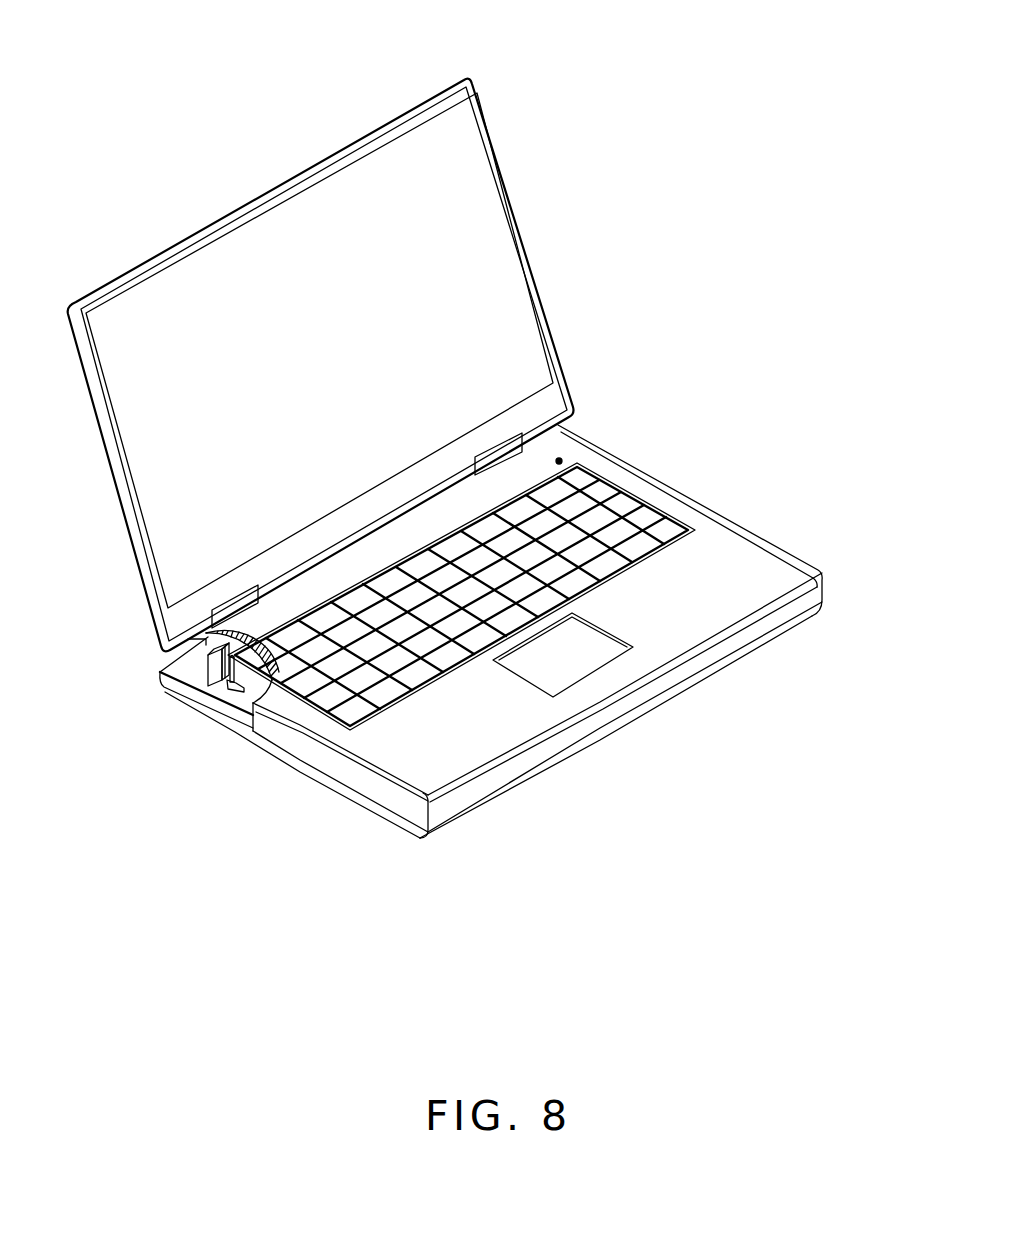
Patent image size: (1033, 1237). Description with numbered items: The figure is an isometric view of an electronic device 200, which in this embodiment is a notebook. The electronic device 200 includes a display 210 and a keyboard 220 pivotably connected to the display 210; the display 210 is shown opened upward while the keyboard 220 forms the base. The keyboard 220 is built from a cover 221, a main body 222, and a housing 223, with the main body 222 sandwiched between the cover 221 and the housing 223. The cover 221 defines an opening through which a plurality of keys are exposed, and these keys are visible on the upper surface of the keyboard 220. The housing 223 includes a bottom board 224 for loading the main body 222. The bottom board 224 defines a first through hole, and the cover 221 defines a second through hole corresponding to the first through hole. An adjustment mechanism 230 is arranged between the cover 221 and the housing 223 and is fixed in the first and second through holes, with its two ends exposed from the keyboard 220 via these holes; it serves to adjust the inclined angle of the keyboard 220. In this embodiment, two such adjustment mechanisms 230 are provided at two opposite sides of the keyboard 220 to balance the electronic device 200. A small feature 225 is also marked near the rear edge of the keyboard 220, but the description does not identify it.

The electronic device 200 is at (606, 74).
The display 210 is at (490, 222).
The keyboard 220 is at (622, 470).
The cover 221 is at (313, 723).
The main body 222 is at (385, 697).
The housing 223 is at (238, 723).
The bottom board 224 is at (222, 697).
The button 225 is at (561, 458).
The adjustment mechanism 230 is at (160, 684).